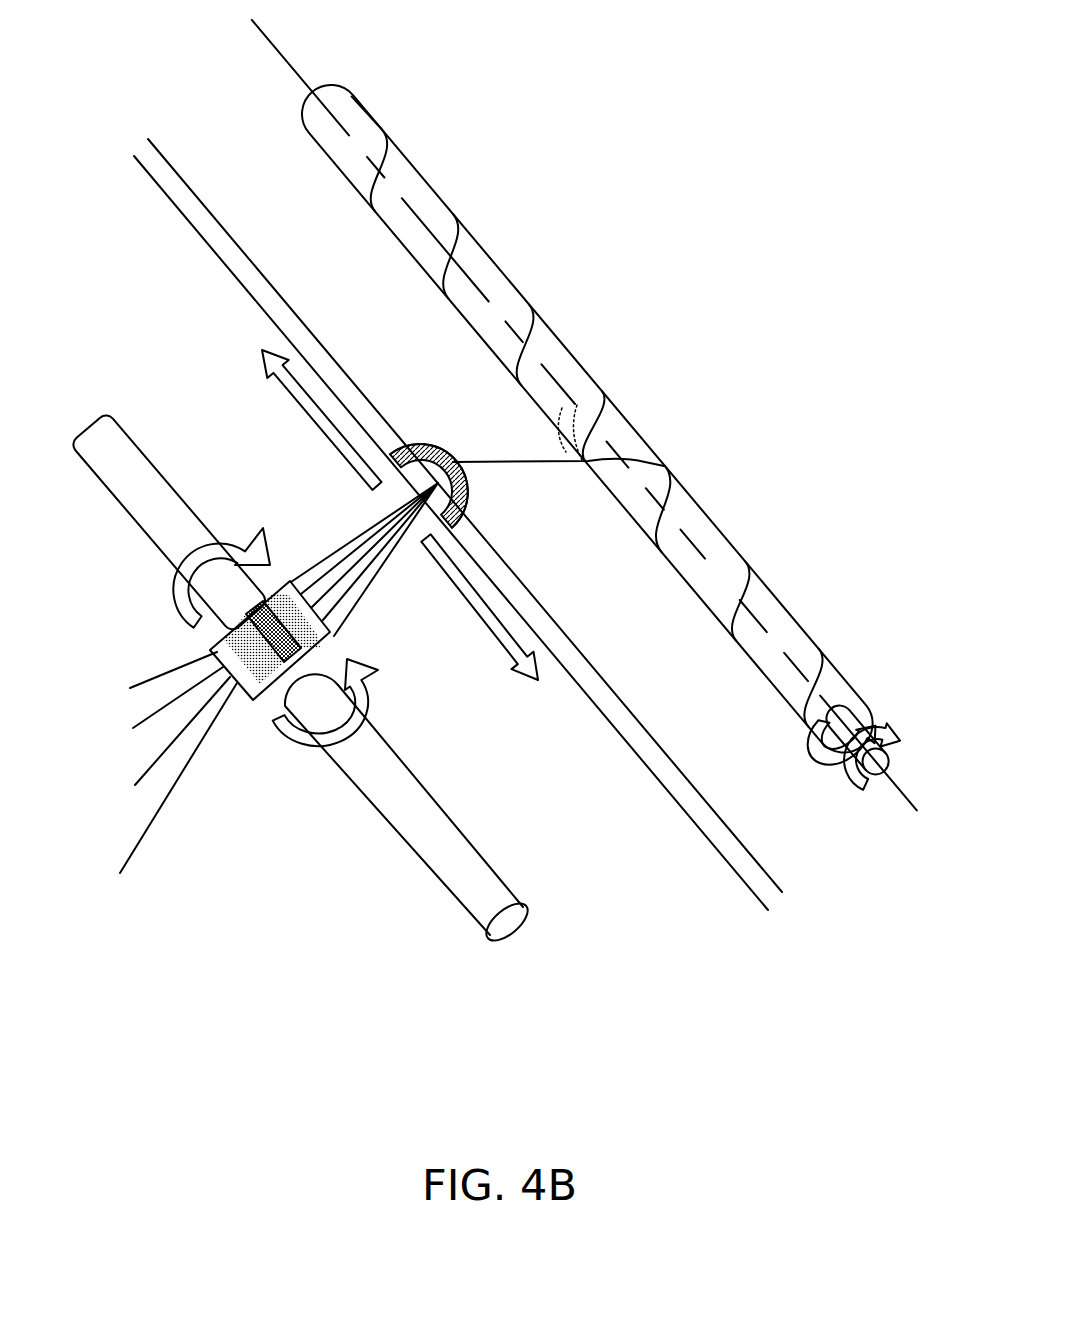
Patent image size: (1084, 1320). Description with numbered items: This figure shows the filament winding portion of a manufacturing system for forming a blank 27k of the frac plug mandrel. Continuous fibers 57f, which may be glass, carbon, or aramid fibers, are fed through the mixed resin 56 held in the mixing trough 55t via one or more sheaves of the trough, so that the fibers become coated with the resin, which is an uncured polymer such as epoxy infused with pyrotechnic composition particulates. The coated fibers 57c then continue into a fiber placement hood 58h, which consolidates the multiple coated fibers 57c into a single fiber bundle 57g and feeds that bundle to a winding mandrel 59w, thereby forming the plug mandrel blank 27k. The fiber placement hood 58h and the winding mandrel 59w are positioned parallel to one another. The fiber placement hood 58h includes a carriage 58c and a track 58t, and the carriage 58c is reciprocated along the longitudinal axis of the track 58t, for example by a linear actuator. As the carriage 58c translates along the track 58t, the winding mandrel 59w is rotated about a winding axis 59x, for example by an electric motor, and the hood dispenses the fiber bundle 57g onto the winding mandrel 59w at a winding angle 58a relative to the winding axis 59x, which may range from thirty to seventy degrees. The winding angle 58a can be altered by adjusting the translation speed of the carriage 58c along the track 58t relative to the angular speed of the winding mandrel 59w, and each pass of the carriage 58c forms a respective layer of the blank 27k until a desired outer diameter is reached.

The blank 27k is at (350, 107).
The fiber placement hood 58h is at (412, 433).
The winding angle 58a is at (561, 450).
The fiber bundle 57g is at (512, 462).
The carriage 58c is at (470, 497).
The resin 56 is at (278, 596).
The coated fibers 57c is at (363, 585).
The track 58t is at (670, 777).
The mixing trough 55t is at (250, 712).
The continuous fibers 57f is at (138, 845).
The winding mandrel 59w is at (868, 724).
The winding axis 59x is at (900, 784).